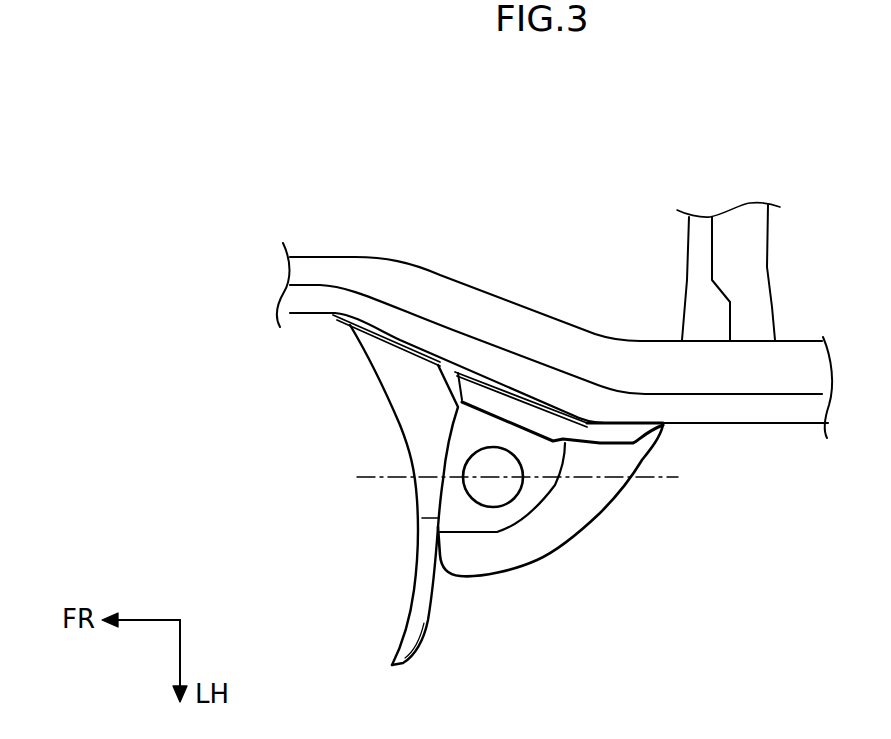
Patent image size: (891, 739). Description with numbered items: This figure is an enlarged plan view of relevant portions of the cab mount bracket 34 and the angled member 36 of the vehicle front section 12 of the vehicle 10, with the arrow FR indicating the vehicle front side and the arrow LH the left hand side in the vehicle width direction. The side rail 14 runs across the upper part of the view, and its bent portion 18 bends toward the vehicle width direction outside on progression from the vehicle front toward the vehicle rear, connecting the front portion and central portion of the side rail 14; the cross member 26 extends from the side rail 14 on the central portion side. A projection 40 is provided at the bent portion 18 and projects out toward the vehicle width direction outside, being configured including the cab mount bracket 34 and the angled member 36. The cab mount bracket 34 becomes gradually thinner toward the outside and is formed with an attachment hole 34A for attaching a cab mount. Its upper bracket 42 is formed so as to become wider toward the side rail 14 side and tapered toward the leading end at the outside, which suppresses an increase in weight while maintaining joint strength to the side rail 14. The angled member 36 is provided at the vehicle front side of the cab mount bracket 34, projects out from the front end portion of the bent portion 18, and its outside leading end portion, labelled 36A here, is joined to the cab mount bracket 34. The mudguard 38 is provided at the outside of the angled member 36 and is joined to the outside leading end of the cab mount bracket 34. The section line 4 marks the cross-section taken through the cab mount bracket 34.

The vehicle 10 is at (554, 337).
The vehicle front section 12 is at (554, 337).
The side rail 14 is at (752, 426).
The bent portion 18 is at (550, 322).
The cross member 26 is at (765, 263).
The cab mount bracket 34 is at (571, 502).
The attachment hole 34A is at (485, 498).
The angled member 36 is at (381, 490).
The edge of flange portion 36A is at (380, 380).
The mudguard 38 is at (403, 625).
The projection 40 is at (482, 592).
The upper bracket 42 is at (602, 515).
The section line 4- 4 is at (360, 478).